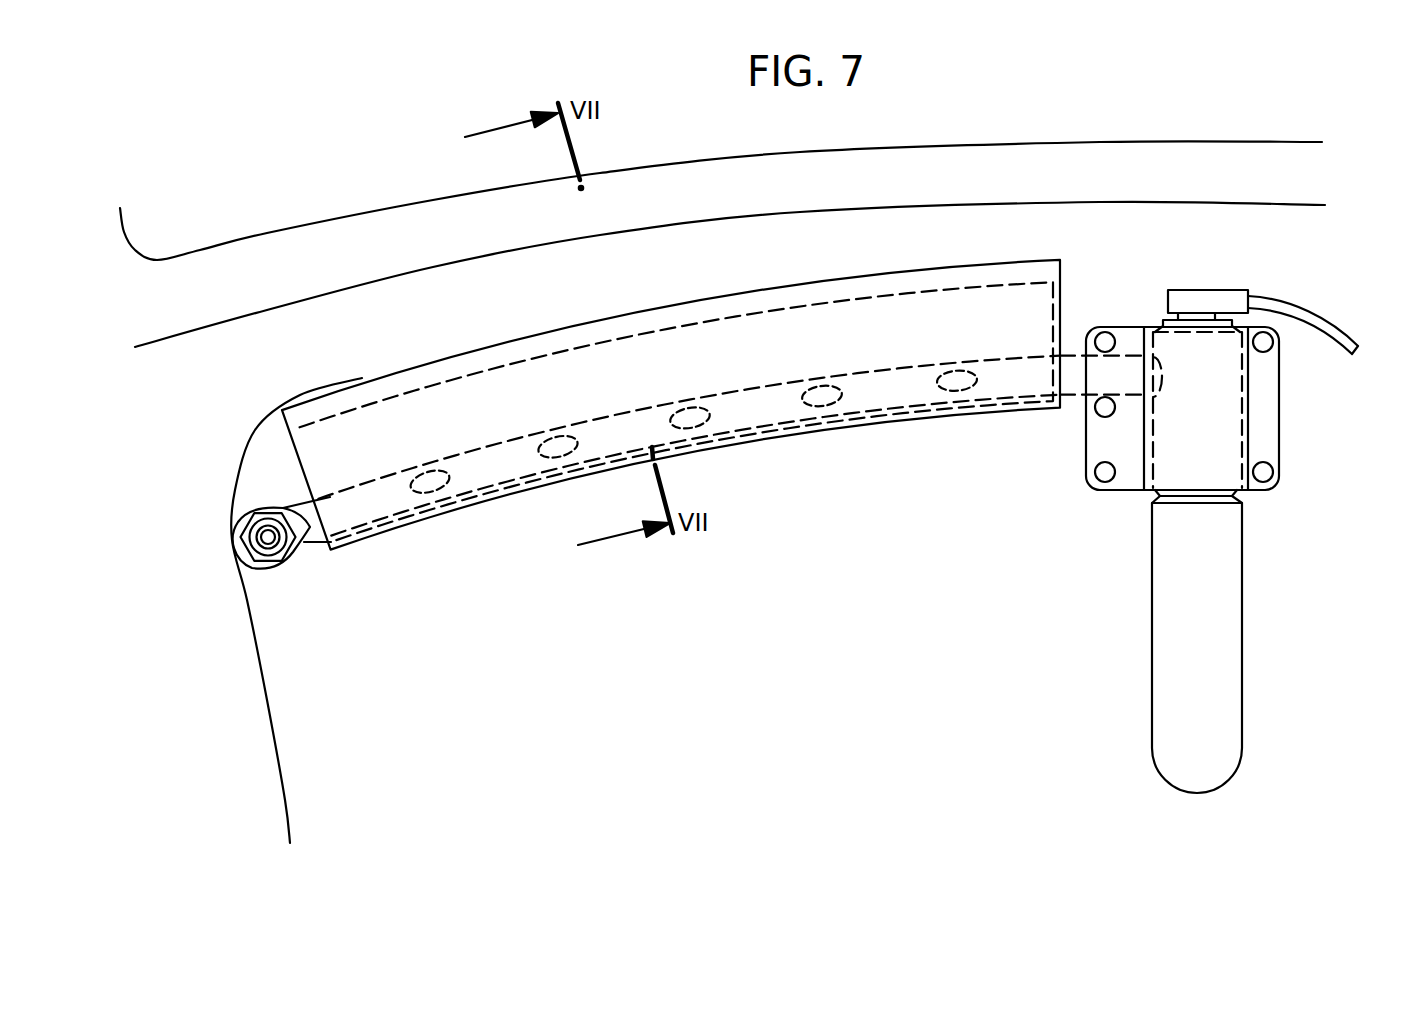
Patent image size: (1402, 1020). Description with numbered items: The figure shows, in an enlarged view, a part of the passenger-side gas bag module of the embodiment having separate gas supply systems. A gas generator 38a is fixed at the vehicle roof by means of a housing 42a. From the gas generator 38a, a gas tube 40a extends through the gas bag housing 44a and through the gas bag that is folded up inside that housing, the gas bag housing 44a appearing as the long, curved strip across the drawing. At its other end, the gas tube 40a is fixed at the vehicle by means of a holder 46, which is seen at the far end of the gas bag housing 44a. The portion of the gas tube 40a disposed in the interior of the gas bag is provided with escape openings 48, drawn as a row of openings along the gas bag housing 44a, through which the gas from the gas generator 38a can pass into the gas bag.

The gas generator 38a is at (1163, 643).
The gas tube 40a is at (1075, 387).
The housing 42a is at (1096, 455).
The gas bag housing 44a is at (890, 350).
The holder 46 is at (303, 532).
The escape openings 48 is at (430, 492).